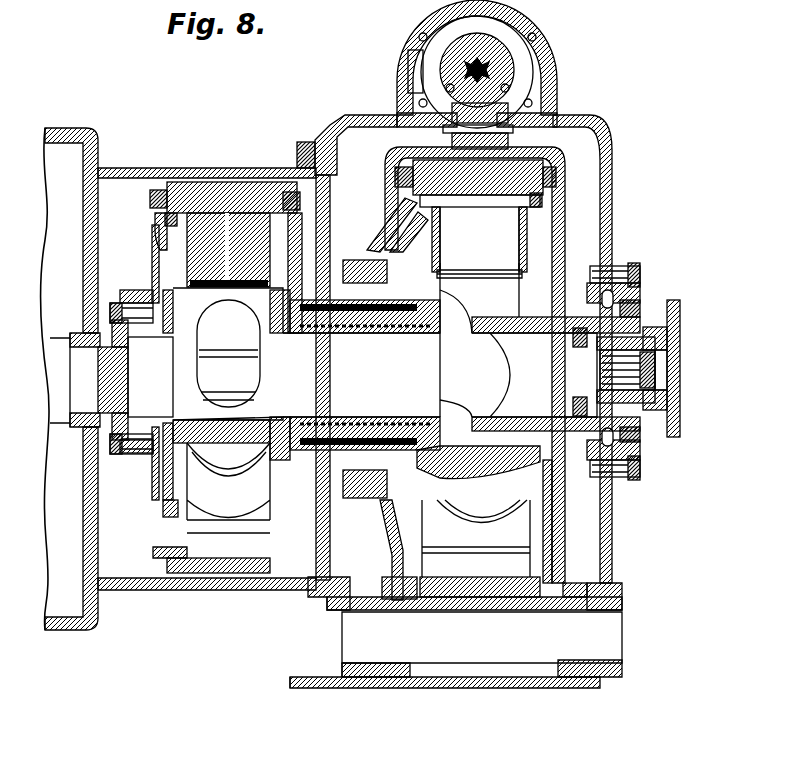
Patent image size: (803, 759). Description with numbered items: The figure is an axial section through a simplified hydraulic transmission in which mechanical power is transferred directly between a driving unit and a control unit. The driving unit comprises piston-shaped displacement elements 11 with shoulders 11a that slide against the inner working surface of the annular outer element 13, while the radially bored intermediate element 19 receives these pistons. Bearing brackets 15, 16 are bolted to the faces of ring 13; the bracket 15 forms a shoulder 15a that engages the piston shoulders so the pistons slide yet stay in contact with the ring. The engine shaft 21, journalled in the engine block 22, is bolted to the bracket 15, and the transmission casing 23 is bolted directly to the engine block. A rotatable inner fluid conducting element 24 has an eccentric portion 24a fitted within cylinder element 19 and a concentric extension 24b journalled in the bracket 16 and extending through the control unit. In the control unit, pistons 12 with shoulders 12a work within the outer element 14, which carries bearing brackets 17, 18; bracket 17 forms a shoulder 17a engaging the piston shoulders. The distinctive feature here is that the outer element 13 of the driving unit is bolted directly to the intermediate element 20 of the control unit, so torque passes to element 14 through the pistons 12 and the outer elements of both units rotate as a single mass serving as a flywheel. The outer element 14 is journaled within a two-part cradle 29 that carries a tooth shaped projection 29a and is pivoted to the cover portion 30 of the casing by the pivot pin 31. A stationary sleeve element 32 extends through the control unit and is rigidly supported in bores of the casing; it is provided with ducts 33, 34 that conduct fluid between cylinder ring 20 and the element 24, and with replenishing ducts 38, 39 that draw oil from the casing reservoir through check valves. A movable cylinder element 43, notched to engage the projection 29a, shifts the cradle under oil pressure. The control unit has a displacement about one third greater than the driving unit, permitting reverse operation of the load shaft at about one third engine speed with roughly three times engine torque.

The displacement element 11 is at (207, 215).
The shoulder 11a is at (166, 219).
The displacement element 12 is at (479, 239).
The shoulder 12a is at (475, 198).
The annular outer element 13 is at (247, 190).
The annular outer element 14 is at (480, 170).
The bearing bracket 15 is at (154, 240).
The shoulder 15a is at (155, 262).
The bearing bracket 16 is at (288, 273).
The bearing bracket 17 is at (392, 200).
The shoulder 17a is at (400, 212).
The bearing bracket 18 is at (552, 198).
The intermediate element 19 is at (187, 262).
The intermediate element 20 is at (433, 259).
The engine shaft 21 is at (83, 380).
The engine block 22 is at (88, 507).
The transmission casing 23 is at (339, 115).
The inner fluid conducting element 24 is at (240, 415).
The eccentric portion 24a is at (187, 320).
The concentric extension 24b is at (320, 336).
The cradle 29 is at (553, 522).
The tooth shaped projection 29a is at (530, 144).
The cover portion 30 is at (493, 688).
The pivot pin 31 is at (622, 625).
The stationary element 32 is at (425, 300).
The duct 33 is at (460, 320).
The duct 34 is at (500, 432).
The duct 38 is at (553, 313).
The duct 39 is at (553, 432).
The movable cylinder element 43 is at (490, 68).